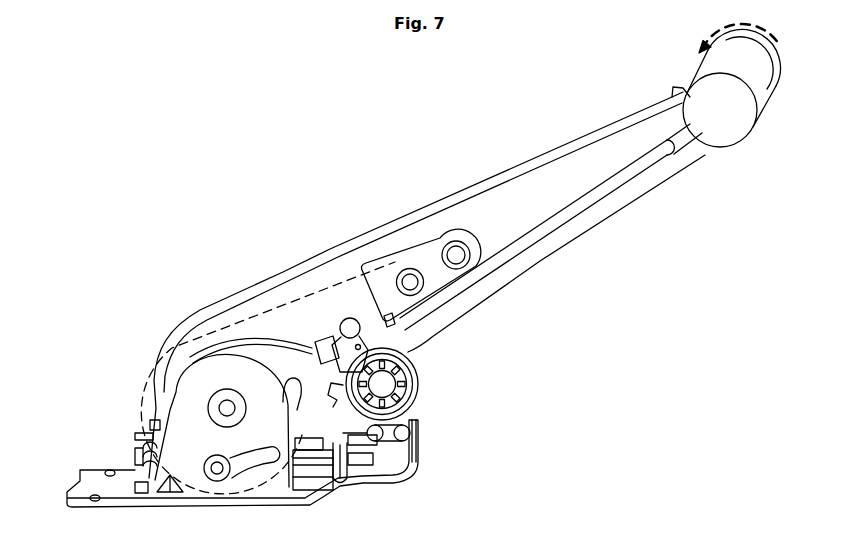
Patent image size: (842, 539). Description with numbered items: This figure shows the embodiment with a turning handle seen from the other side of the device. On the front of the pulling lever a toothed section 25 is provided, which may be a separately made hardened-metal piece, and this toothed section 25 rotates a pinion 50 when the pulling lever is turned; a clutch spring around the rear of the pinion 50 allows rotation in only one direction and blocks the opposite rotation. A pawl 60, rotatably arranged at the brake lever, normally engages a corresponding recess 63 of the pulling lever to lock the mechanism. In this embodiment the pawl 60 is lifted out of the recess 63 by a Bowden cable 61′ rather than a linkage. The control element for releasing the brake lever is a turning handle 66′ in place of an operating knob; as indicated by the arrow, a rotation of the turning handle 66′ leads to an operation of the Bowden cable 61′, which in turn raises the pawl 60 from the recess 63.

The toothed section 25 is at (404, 432).
The pinion 50 is at (410, 387).
The pawl 60 is at (336, 360).
The Bowden cable 61′ is at (535, 236).
The recess 63 is at (322, 344).
The turning handle 66′ is at (727, 128).